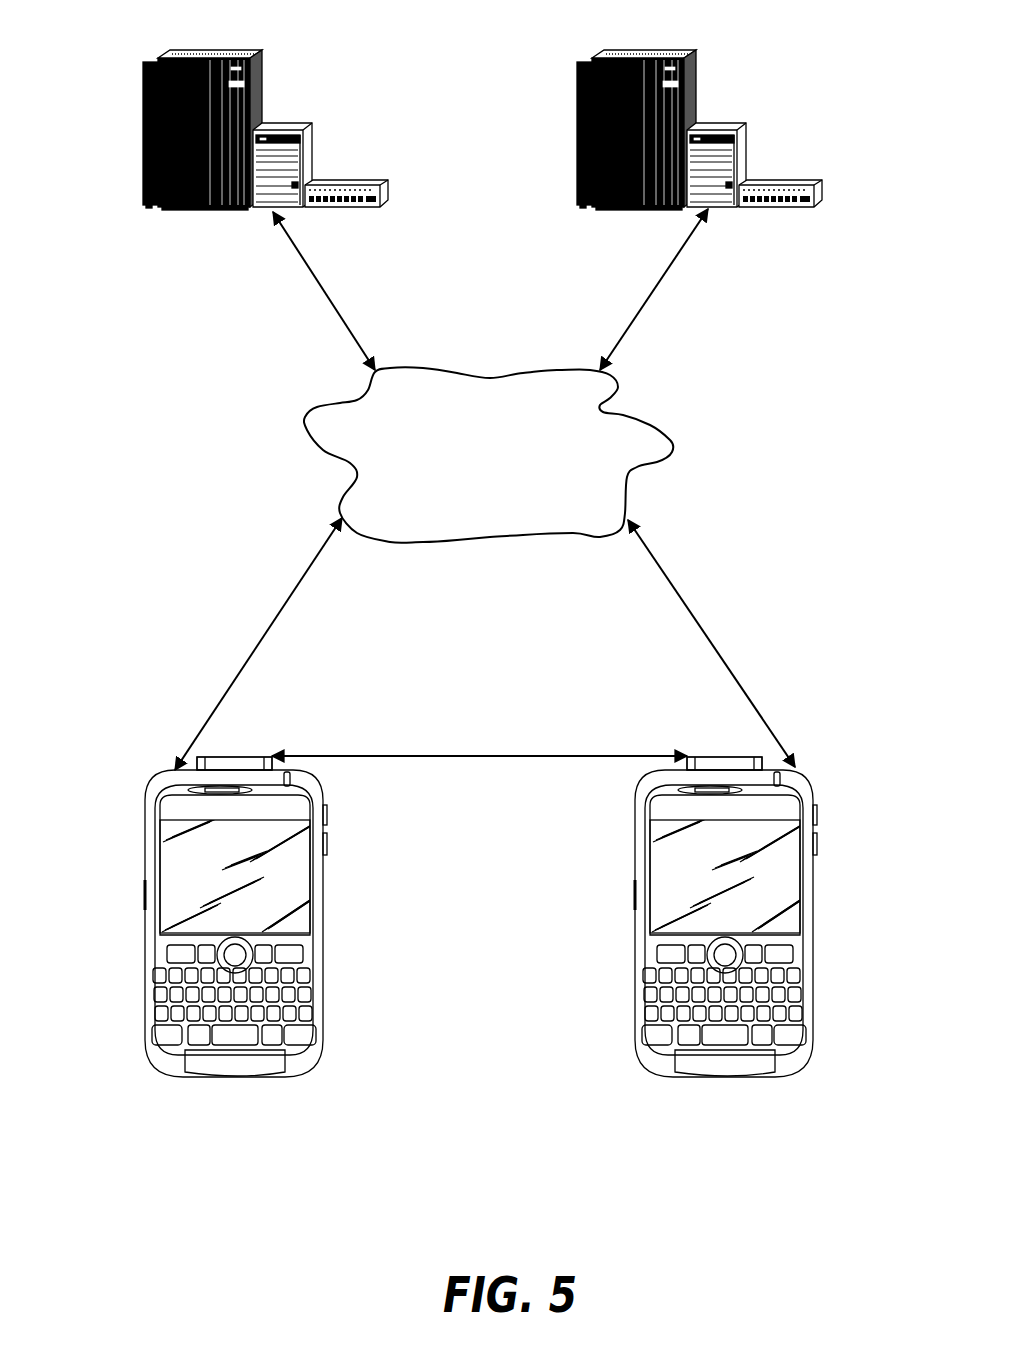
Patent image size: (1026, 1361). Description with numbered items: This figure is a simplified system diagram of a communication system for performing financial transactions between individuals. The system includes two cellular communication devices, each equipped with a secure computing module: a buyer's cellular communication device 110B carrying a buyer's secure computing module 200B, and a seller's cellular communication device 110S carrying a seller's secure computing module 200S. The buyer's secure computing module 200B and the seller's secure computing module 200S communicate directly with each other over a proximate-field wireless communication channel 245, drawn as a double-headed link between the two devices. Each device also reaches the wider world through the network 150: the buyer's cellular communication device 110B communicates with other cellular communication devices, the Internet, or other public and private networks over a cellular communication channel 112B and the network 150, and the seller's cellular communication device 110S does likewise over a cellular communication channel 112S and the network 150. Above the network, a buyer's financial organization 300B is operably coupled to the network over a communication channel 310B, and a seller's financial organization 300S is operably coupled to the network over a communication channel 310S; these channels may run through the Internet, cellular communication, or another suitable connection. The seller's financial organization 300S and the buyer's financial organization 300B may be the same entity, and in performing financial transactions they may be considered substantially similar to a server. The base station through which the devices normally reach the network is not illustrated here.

The buyer's financial organization 300B is at (213, 48).
The seller's financial organization 300S is at (672, 48).
The communication channel 310B is at (347, 310).
The communication channel 310S is at (637, 310).
The network 150 is at (488, 455).
The cellular communication channel 112B is at (252, 648).
The cellular communication channel 112S is at (713, 645).
The proximate-field wireless communication channel 245 is at (462, 755).
The buyer's cellular communication device 110B is at (145, 892).
The seller's cellular communication device 110S is at (813, 888).
The buyer's secure computing module 200B is at (247, 755).
The seller's secure computing module 200S is at (713, 755).